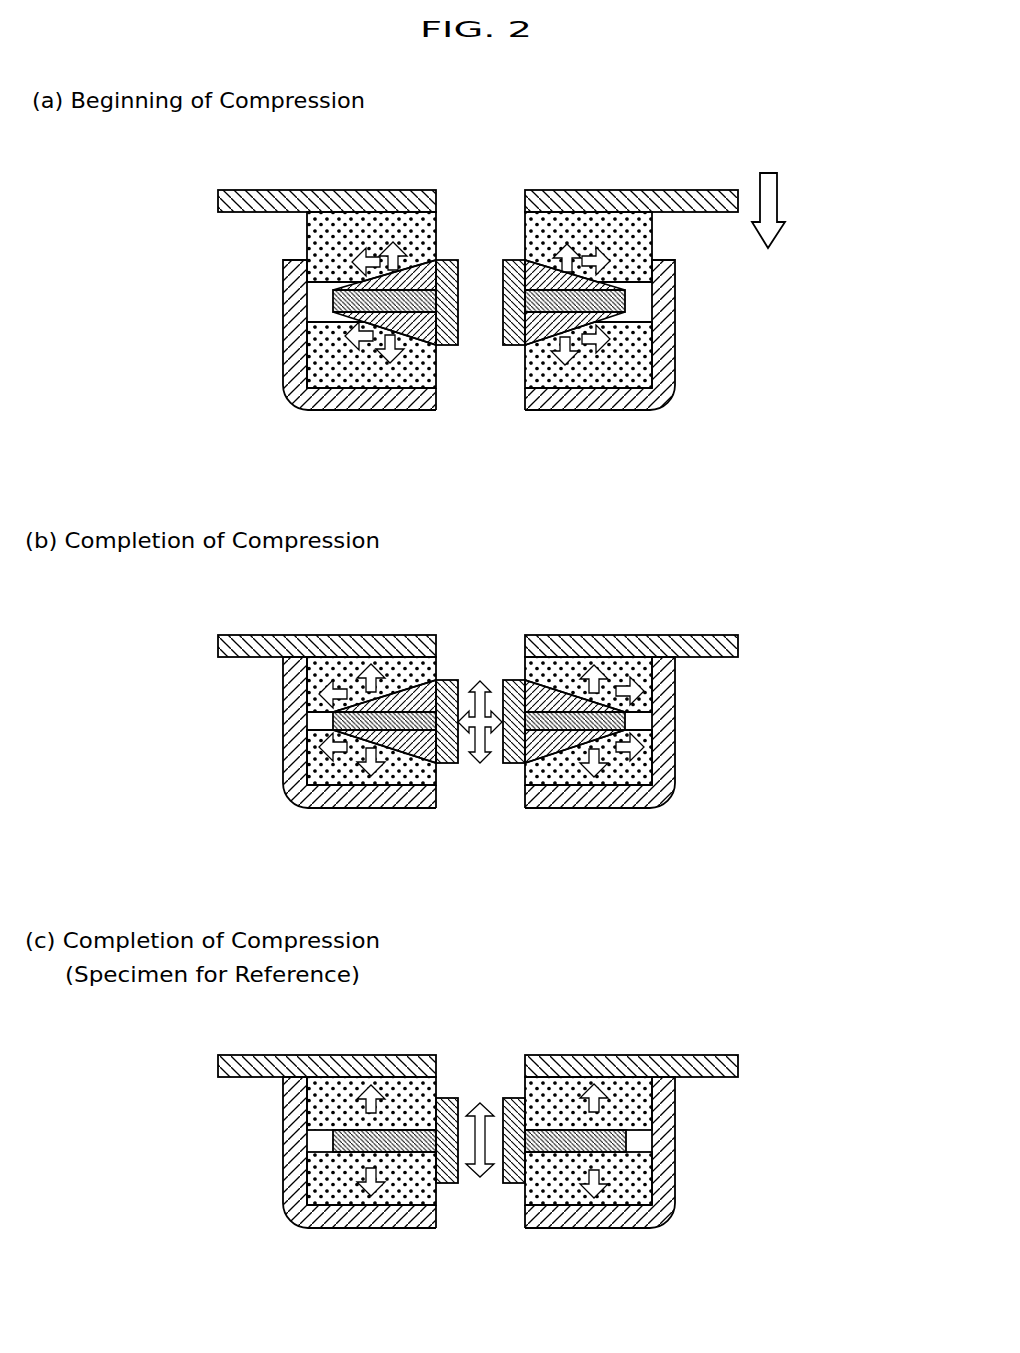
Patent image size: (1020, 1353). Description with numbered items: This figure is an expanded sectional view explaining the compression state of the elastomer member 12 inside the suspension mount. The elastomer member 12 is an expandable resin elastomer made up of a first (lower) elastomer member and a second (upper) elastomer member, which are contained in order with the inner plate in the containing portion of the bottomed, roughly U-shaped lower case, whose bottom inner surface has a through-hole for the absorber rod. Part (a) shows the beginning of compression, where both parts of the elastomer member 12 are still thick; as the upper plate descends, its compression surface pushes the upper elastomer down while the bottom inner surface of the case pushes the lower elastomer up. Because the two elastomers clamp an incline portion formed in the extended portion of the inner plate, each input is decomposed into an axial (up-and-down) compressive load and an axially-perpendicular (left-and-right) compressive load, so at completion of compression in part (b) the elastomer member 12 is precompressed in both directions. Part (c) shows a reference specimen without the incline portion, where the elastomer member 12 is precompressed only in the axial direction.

The elastomer member 12 is at (232, 1115).